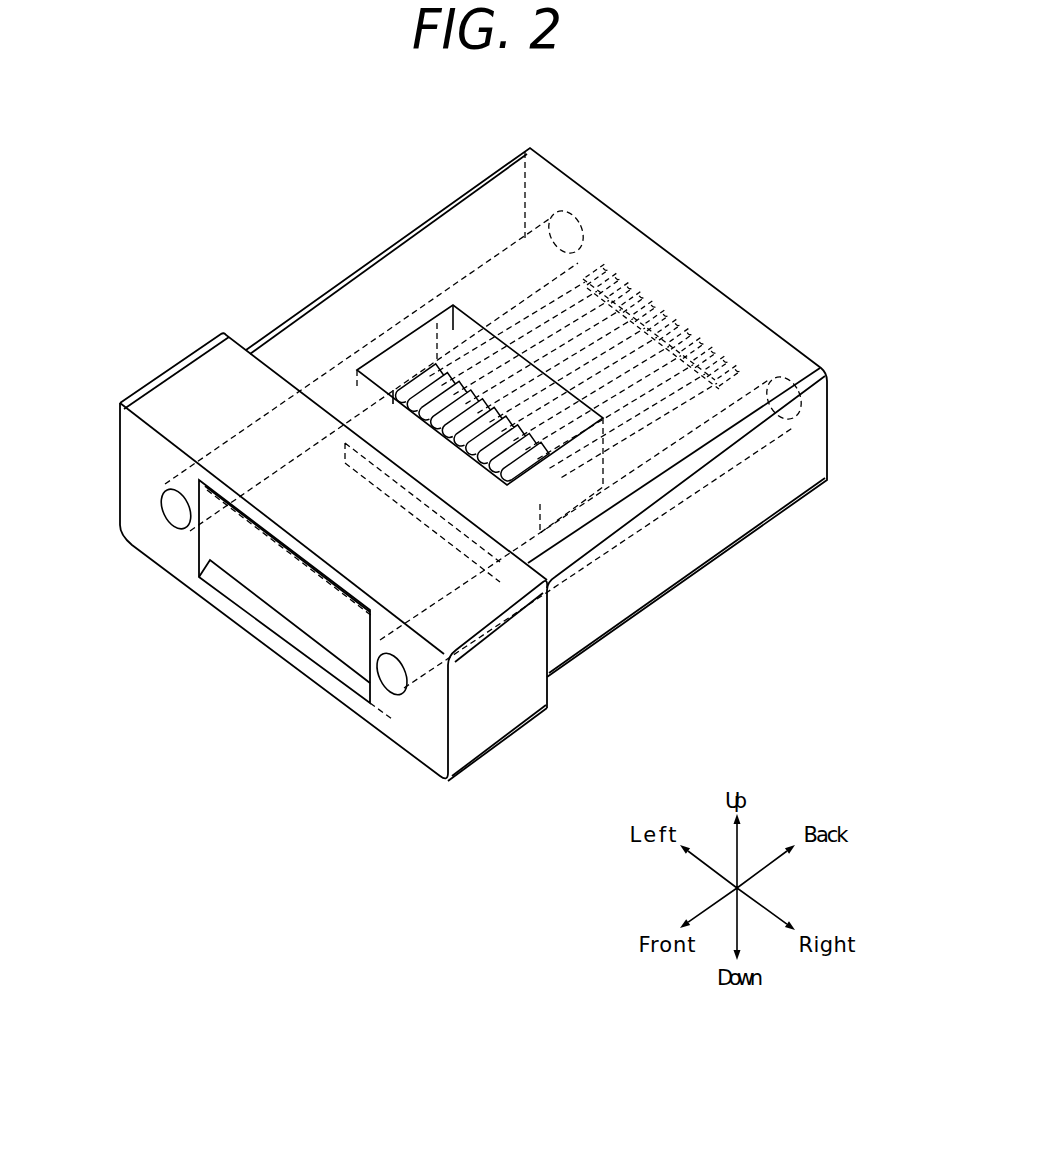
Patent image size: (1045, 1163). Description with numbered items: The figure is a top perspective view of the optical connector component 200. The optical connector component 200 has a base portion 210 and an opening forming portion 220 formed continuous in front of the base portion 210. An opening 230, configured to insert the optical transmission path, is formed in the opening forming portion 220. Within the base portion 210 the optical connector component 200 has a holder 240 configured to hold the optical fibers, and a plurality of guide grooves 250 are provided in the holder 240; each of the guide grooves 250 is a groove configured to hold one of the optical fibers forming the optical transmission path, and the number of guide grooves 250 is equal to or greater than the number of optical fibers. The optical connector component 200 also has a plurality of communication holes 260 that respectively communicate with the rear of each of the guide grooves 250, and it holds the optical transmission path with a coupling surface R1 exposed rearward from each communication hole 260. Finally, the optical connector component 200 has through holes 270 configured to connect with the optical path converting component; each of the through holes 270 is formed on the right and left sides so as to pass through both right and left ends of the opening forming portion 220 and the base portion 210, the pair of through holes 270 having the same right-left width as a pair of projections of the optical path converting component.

The optical connector component 200 is at (321, 165).
The base portion 210 is at (484, 200).
The opening forming portion 220 is at (205, 368).
The opening 230 is at (323, 620).
The holder 240 is at (400, 381).
The guide grooves 250 is at (440, 374).
The communication holes 260 is at (597, 340).
The through holes 270 is at (177, 510).
The coupling surface R1 is at (716, 321).